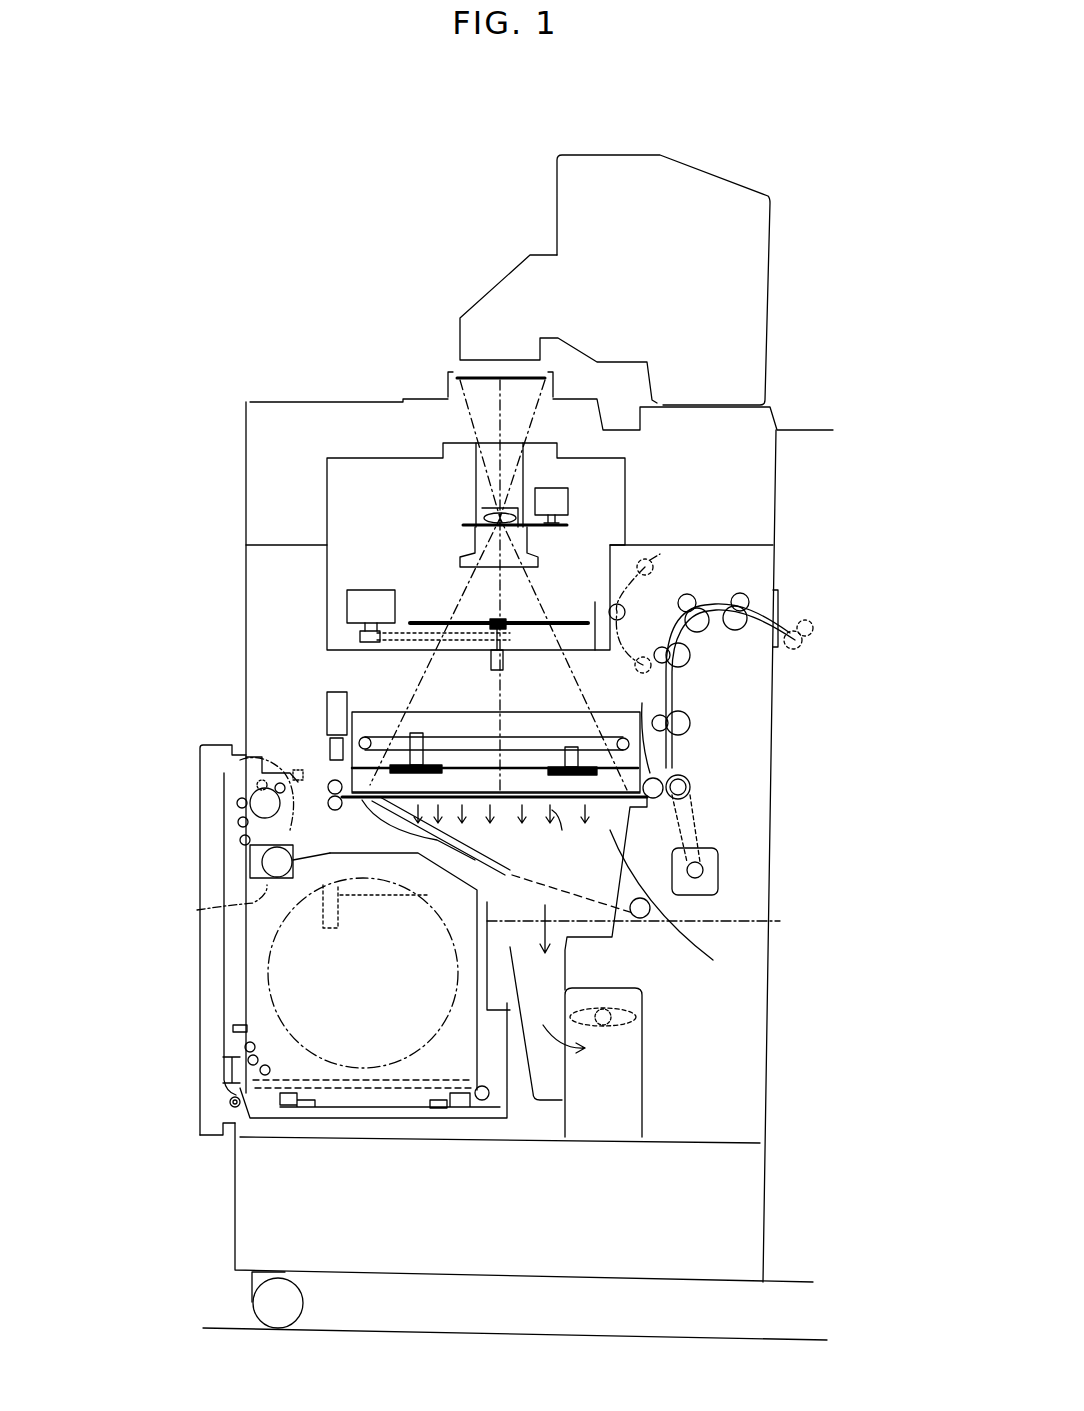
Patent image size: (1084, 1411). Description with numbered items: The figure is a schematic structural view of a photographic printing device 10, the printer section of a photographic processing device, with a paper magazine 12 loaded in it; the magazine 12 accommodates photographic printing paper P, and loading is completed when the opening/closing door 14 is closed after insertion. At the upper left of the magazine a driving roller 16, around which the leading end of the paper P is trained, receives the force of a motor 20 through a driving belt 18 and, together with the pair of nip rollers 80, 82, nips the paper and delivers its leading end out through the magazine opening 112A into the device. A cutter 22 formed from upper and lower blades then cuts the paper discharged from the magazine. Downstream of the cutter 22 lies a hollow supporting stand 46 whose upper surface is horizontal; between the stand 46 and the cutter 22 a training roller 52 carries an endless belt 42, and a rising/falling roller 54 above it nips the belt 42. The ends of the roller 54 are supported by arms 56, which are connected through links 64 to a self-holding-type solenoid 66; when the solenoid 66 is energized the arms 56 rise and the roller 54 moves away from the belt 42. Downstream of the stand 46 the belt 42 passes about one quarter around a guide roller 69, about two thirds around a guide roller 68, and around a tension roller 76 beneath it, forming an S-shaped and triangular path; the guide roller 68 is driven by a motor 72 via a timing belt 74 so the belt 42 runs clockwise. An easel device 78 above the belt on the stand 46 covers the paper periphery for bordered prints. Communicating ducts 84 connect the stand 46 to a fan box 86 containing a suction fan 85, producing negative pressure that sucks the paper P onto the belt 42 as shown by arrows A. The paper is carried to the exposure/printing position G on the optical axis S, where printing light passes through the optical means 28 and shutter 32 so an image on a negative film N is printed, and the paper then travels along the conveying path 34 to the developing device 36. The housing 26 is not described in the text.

The photographic printing device 10 is at (328, 318).
The upper housing 26 is at (770, 307).
The negative film N is at (480, 378).
The optical means 28 is at (474, 553).
The shutter 32 is at (558, 612).
The self-holding-type solenoid 66 is at (330, 700).
The links 64 is at (341, 745).
The arms 56 is at (348, 768).
The easel device 78 is at (426, 733).
The optical axis S is at (510, 712).
The exposure/printing position G is at (502, 785).
The guide roller 69 is at (636, 725).
The conveying path 34 is at (680, 688).
The developing device 36 is at (826, 708).
The driving belt 18 is at (273, 757).
The cutter 22 is at (317, 777).
The magazine opening 112A is at (290, 783).
The nip roller 82 is at (257, 771).
The nip roller 80 is at (240, 803).
The driving roller 16 is at (256, 820).
The guide roller 68 is at (691, 778).
The timing belt 74 is at (697, 830).
The motor 72 is at (722, 872).
The training roller 52 is at (356, 838).
The rising/falling roller 54 is at (494, 782).
The arrows A is at (501, 829).
The supporting stand 46 is at (655, 897).
The endless belt 42 is at (652, 929).
The motor 20 is at (197, 910).
The communicating ducts 84 is at (533, 966).
The tension roller 76 is at (660, 925).
The suction fan 85 is at (640, 1019).
The fan box 86 is at (628, 1068).
The photographic printing paper P is at (425, 1030).
The opening/closing door 14 is at (193, 1083).
The paper magazine 12 is at (355, 1118).